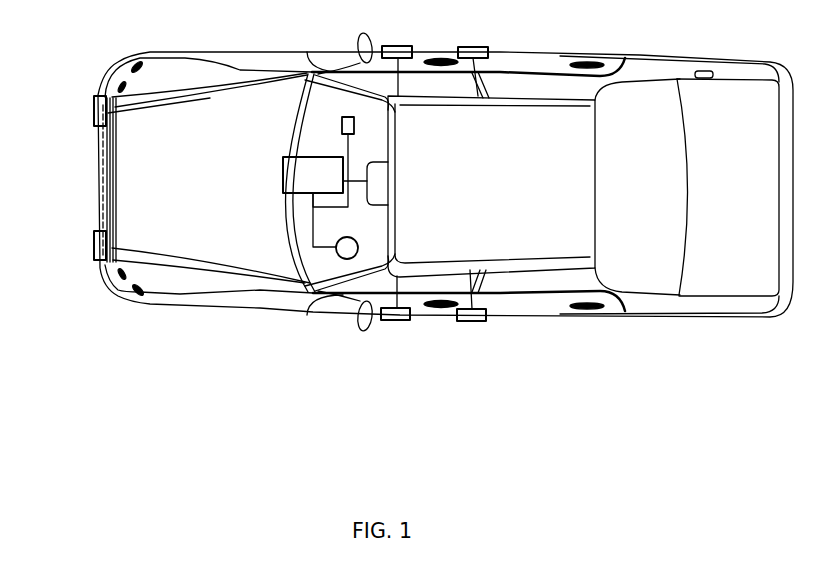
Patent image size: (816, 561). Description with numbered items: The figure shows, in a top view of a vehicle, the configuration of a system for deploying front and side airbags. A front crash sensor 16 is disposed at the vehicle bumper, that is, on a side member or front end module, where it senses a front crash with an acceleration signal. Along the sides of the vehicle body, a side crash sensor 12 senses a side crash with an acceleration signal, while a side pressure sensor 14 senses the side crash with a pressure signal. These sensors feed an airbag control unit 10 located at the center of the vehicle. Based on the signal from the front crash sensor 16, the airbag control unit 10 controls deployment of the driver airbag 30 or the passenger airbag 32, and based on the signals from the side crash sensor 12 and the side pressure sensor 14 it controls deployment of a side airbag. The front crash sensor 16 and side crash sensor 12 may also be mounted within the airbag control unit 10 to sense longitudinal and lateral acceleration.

The airbag control unit 10 is at (283, 178).
The side crash sensor 12 is at (468, 322).
The side pressure sensor 14 is at (393, 321).
The front crash sensor 16 is at (94, 112).
The driver airbag 30 is at (340, 258).
The passenger airbag 32 is at (342, 125).